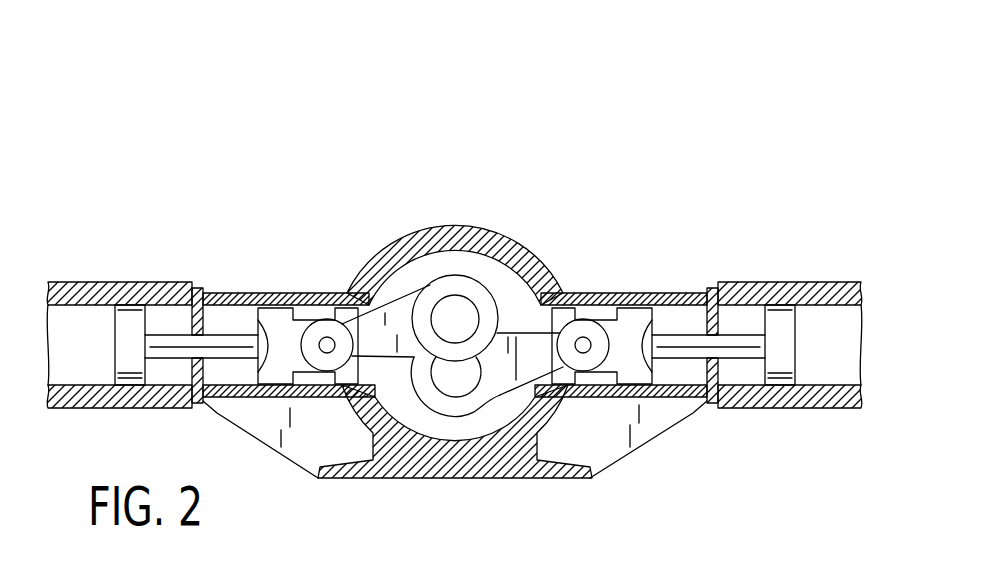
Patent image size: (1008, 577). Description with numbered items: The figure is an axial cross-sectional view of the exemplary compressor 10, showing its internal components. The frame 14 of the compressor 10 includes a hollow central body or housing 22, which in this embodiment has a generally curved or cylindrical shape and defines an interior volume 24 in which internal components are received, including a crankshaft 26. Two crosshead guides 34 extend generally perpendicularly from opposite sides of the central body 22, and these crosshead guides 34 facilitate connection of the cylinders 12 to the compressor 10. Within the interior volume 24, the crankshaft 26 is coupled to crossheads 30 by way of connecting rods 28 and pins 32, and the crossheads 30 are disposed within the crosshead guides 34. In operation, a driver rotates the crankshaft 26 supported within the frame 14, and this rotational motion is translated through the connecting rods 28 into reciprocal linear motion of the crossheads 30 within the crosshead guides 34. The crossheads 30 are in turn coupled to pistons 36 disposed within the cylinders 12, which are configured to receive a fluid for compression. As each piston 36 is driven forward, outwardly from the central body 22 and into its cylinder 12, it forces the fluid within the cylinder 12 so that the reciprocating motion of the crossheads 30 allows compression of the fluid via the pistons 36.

The compressor 10 is at (524, 184).
The cylinder 12 is at (150, 282).
The frame 14 is at (508, 245).
The central body 22 is at (395, 250).
The interior volume 24 is at (453, 260).
The crankshaft 26 is at (455, 320).
The connecting rod 28 is at (390, 384).
The crosshead 30 is at (278, 307).
The pin 32 is at (326, 343).
The crosshead guide 34 is at (223, 393).
The piston 36 is at (128, 340).